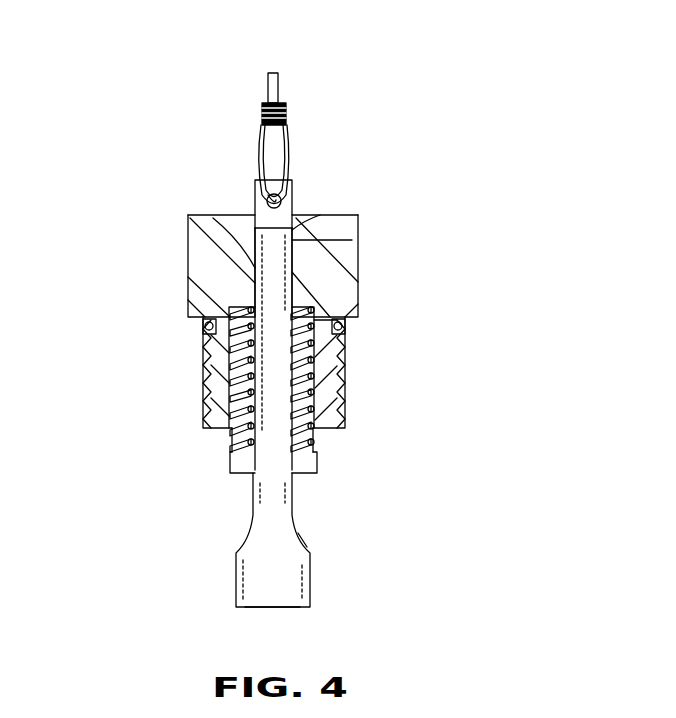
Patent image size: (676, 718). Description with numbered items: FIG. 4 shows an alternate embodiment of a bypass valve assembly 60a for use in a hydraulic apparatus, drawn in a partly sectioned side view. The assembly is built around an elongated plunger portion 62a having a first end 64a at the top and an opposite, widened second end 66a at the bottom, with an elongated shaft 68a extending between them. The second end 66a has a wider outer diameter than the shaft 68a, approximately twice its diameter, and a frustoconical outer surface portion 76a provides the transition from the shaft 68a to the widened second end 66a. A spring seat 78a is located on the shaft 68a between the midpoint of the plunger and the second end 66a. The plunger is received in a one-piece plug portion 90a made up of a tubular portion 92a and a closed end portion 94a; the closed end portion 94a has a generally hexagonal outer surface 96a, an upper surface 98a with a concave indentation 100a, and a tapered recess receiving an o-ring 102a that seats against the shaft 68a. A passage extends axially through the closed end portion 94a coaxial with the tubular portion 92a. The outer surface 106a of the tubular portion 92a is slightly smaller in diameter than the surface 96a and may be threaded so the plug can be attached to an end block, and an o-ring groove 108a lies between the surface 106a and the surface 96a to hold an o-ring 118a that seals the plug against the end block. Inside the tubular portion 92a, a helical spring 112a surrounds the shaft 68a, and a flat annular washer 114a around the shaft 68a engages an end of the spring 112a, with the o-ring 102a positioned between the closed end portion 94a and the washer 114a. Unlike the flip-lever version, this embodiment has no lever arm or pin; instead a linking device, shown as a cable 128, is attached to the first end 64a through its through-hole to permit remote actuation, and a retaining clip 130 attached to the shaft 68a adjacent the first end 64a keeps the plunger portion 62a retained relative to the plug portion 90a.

The bypass valve assembly 60a is at (132, 210).
The plunger portion 62a is at (271, 370).
The first end 64a is at (256, 187).
The second end 66a is at (267, 590).
The shaft 68a is at (254, 230).
The frustoconical outer surface portion 76a is at (300, 532).
The spring seat 78a is at (303, 463).
The plug portion 90a is at (185, 240).
The tubular portion 92a is at (205, 376).
The closed end portion 94a is at (358, 244).
The hexagonal outer surface 96a is at (358, 280).
The upper surface 98a is at (352, 215).
The concave indentation 100a is at (330, 215).
The o-ring 102a is at (255, 300).
The outer surface 106a is at (340, 392).
The o-ring groove 108a is at (345, 334).
The spring 112a is at (345, 356).
The washer 114a is at (345, 305).
The o-ring 118a is at (201, 328).
The cable 128 is at (278, 85).
The retaining clip 130 is at (290, 215).